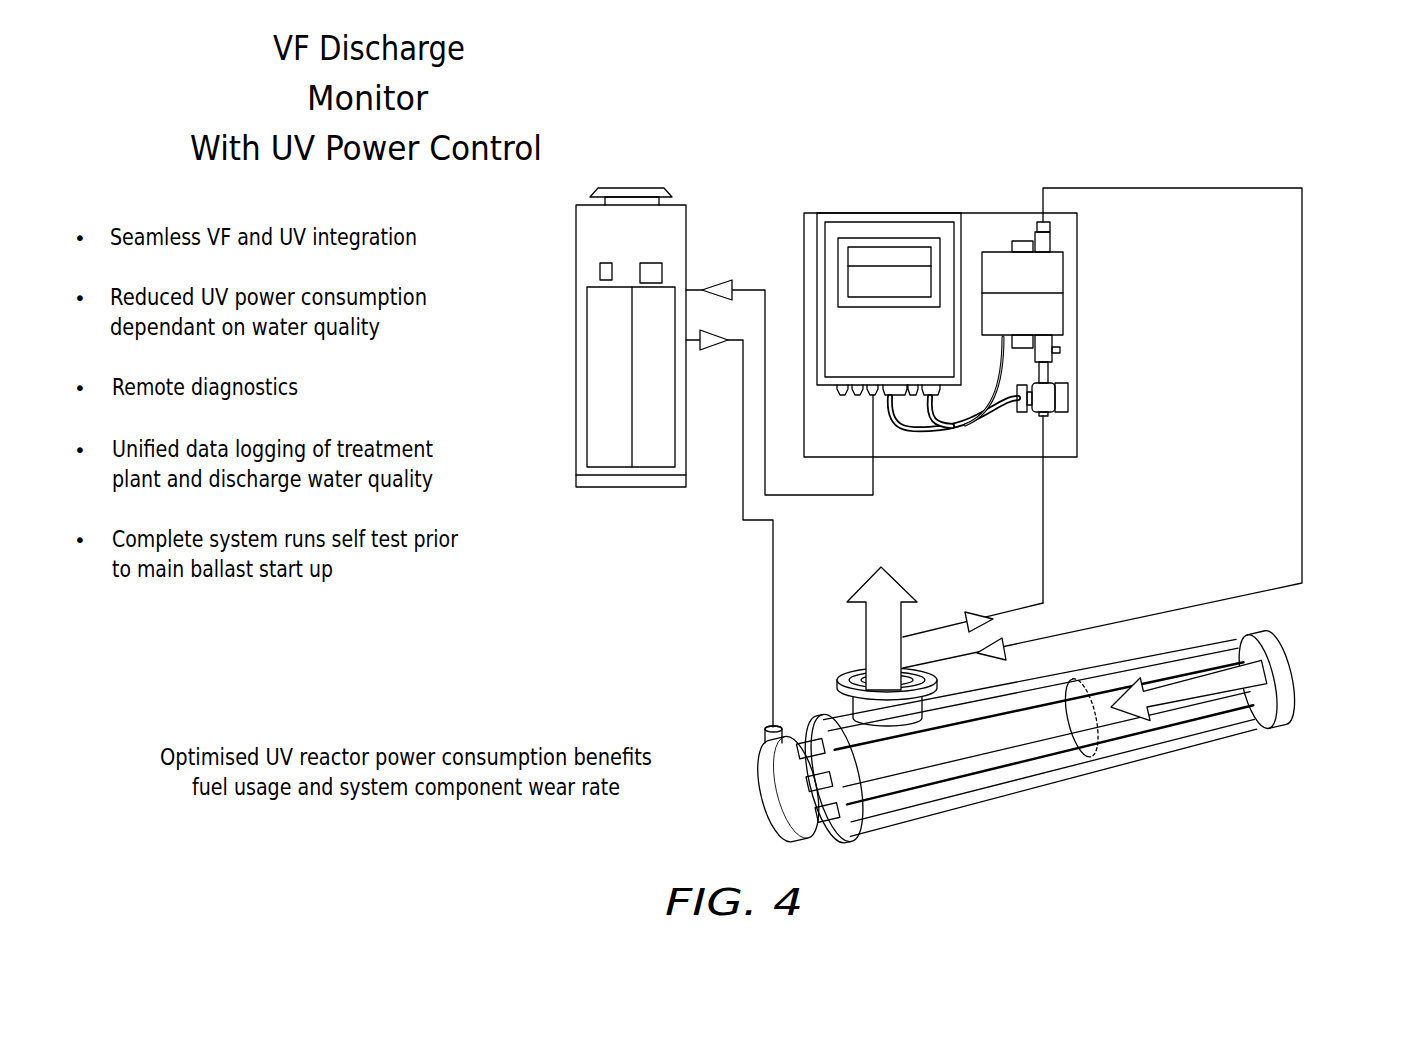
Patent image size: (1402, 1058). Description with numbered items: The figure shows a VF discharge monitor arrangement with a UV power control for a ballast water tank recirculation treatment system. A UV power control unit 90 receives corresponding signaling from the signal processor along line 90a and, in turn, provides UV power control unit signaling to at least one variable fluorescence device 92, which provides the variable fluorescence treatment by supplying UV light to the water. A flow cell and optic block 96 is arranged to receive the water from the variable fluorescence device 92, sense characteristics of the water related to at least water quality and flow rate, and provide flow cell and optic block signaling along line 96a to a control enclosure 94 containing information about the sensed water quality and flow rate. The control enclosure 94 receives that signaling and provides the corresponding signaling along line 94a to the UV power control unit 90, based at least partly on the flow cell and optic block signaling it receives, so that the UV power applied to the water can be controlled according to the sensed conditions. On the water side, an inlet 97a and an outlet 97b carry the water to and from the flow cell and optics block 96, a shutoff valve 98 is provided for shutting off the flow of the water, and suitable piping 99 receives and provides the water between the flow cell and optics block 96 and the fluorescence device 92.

The UV power control unit 90 is at (629, 386).
The line 90a is at (773, 623).
The variable fluorescence device 92 is at (1283, 727).
The control enclosure 94 is at (940, 255).
The line 94a is at (829, 500).
The flow cell and optic block 96 is at (1063, 275).
The line 96a is at (925, 433).
The inlet 97a is at (1050, 415).
The outlet 97b is at (1050, 225).
The shutoff valve 98 is at (1068, 400).
The piping 99 is at (1302, 440).